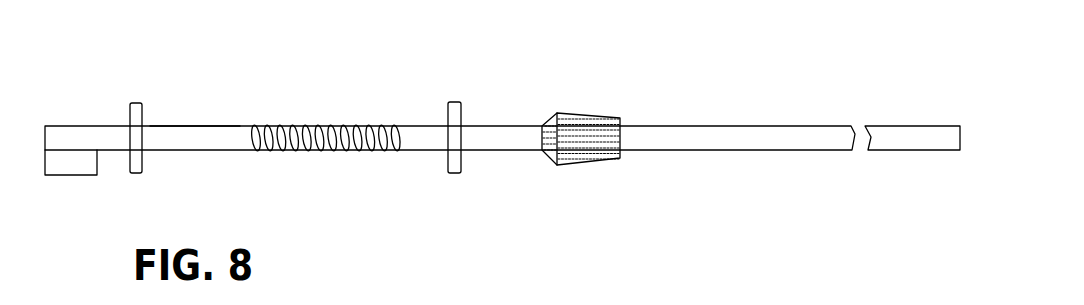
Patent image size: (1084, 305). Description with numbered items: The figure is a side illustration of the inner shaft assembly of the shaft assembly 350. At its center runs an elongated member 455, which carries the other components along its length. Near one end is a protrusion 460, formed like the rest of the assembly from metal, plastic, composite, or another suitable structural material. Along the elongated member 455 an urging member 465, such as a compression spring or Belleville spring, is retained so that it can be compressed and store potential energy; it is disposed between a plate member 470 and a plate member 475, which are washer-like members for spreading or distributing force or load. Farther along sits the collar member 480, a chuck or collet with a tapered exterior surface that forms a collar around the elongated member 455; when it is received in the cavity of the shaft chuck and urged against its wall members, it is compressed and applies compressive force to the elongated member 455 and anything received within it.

The shaft assembly 350 is at (603, 70).
The elongated member 455 is at (232, 125).
The protrusion 460 is at (67, 176).
The urging member 465 is at (334, 162).
The plate member 470 is at (137, 174).
The plate member 475 is at (455, 174).
The collar member 480 is at (565, 111).